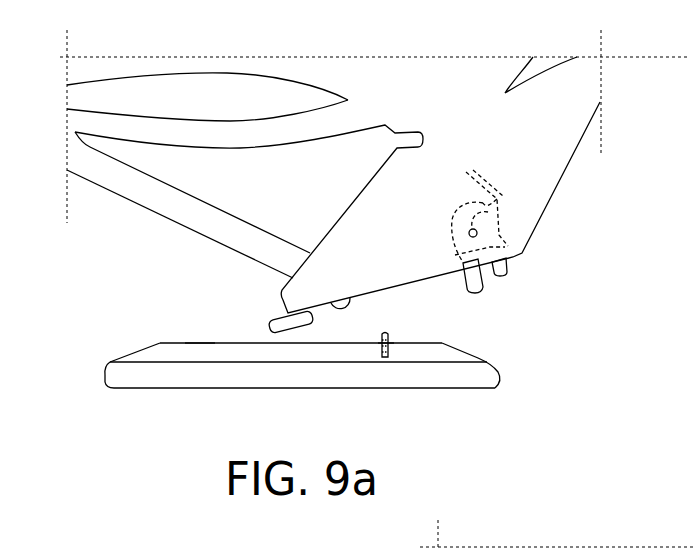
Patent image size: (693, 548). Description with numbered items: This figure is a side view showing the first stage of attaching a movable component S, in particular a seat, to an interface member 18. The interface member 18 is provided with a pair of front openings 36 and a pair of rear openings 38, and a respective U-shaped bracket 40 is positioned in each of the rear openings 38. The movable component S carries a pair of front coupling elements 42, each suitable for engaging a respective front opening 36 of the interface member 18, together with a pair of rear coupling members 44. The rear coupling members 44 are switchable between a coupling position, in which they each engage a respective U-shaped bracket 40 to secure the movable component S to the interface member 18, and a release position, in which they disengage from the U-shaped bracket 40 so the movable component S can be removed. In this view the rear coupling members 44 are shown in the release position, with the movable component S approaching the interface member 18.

The movable component S is at (555, 128).
The interface member 18 is at (110, 381).
The front opening 36 is at (196, 340).
The rear opening 38 is at (395, 343).
The U-shaped bracket 40 is at (382, 331).
The front coupling element 42 is at (265, 327).
The rear coupling member 44 is at (480, 293).